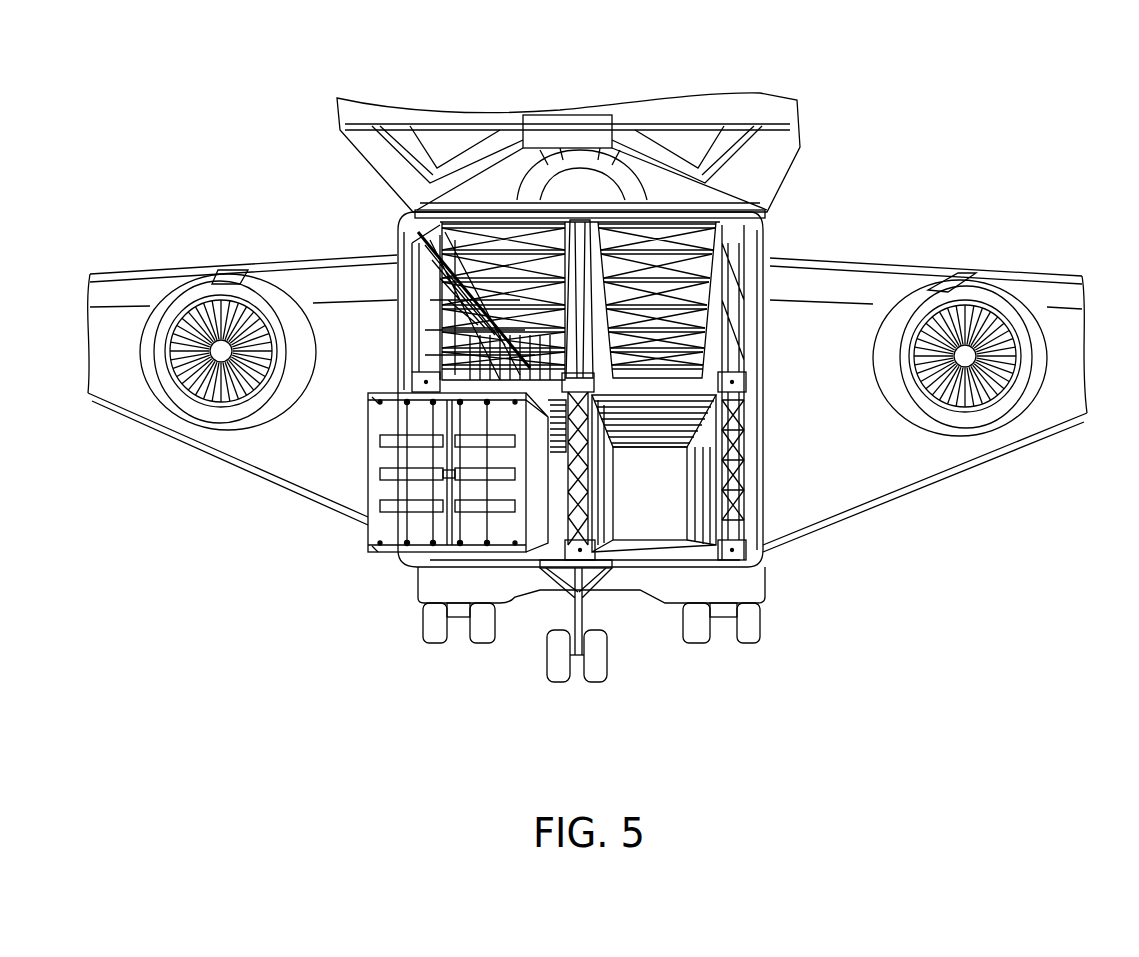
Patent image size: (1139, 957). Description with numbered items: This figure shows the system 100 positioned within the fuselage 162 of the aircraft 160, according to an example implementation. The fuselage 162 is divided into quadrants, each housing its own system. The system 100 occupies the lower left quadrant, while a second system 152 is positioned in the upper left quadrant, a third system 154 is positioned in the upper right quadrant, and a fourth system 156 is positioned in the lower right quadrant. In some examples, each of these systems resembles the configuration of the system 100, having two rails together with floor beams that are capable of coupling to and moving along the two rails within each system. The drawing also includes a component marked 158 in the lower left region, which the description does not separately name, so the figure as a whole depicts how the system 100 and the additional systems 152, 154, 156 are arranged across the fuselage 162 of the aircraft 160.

The system 100 is at (543, 548).
The second system 152 is at (413, 302).
The third system 154 is at (742, 366).
The fourth system 156 is at (763, 552).
The shipping container 158 is at (387, 532).
The aircraft 160 is at (873, 158).
The fuselage 162 is at (418, 240).